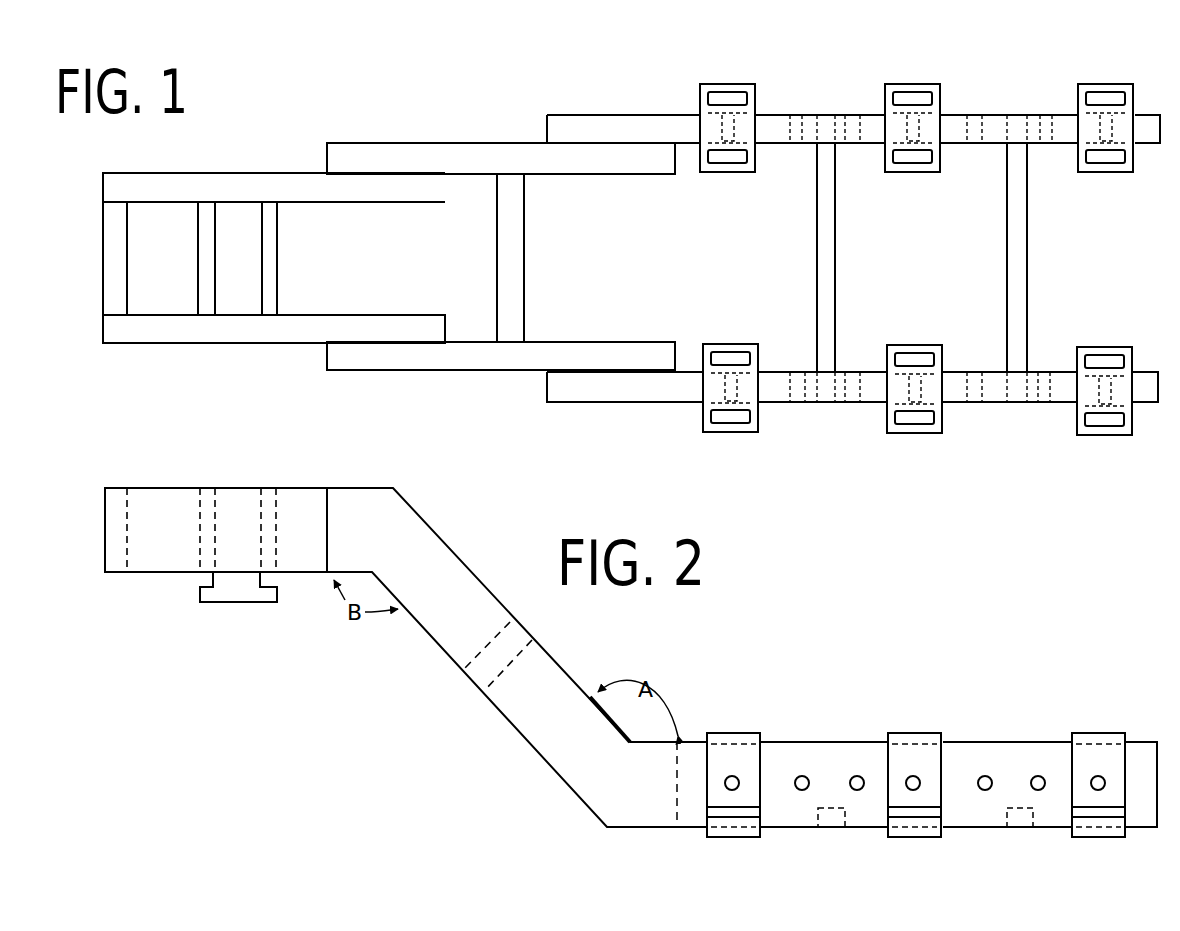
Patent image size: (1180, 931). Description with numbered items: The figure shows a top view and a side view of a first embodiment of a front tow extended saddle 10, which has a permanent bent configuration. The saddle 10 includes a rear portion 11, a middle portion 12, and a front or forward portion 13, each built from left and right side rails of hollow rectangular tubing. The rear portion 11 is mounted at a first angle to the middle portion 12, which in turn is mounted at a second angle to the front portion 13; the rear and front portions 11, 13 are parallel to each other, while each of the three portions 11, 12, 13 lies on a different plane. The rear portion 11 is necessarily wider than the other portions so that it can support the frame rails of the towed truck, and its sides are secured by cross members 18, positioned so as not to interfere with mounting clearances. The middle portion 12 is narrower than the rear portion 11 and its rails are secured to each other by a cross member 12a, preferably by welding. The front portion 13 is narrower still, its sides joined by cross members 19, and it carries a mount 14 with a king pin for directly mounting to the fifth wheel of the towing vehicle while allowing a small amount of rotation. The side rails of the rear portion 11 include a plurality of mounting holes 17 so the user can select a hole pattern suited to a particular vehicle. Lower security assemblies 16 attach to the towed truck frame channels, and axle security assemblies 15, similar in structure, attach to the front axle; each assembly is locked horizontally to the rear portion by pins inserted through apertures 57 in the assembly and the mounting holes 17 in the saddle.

In FIG. 1, the front tow extended saddle 10 is at (389, 211).
In FIG. 2, the front tow extended saddle 10 is at (372, 615).
In FIG. 1, the rear portion 11 is at (853, 240).
In FIG. 2, the rear portion 11 is at (887, 776).
In FIG. 1, the middle portion 12 is at (501, 212).
In FIG. 2, the middle portion 12 is at (507, 722).
In FIG. 1, the cross member 12a is at (524, 262).
In FIG. 1, the front portion 13 is at (274, 217).
In FIG. 2, the front portion 13 is at (217, 488).
In FIG. 2, the mount 14 is at (245, 602).
In FIG. 1, the axle security assembly 15 is at (932, 173).
In FIG. 2, the axle security assembly 15 is at (918, 733).
In FIG. 1, the lower security assembly 16 is at (741, 172).
In FIG. 2, the lower security assembly 16 is at (728, 733).
In FIG. 2, the mounting hole 17 is at (802, 775).
In FIG. 1, the cross member 18 is at (837, 222).
In FIG. 2, the cross member 18 is at (830, 830).
In FIG. 1, the cross member 19 is at (127, 235).
In FIG. 2, the cross member 19 is at (125, 507).
In FIG. 2, the aperture 57 is at (725, 783).